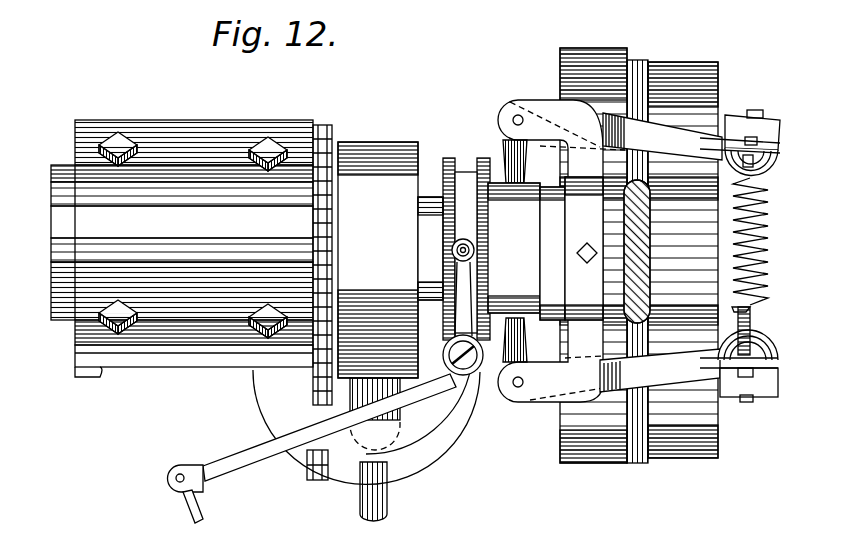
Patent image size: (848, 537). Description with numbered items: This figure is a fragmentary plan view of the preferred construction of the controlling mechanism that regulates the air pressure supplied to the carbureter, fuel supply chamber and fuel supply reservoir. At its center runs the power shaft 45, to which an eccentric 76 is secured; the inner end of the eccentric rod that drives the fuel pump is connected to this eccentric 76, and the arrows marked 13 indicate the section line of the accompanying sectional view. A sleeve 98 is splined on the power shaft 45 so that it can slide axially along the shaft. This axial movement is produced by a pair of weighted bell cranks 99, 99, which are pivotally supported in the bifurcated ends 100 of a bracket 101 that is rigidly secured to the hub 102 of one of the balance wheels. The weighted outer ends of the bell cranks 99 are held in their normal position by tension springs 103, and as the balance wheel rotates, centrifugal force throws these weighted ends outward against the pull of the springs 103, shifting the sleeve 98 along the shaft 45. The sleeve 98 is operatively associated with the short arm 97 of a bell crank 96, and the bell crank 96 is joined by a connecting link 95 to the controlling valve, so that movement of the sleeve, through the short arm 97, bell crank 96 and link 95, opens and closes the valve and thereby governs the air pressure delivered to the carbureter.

The section line 13 is at (547, 60).
The power shaft 45 is at (553, 210).
The eccentric 76 is at (377, 142).
The connecting link 95 is at (206, 511).
The bell crank 96 is at (231, 462).
The short arm 97 is at (460, 283).
The sleeve 98 is at (497, 182).
The weighted bell cranks 99 is at (693, 137).
The bifurcated ends 100 is at (520, 100).
The bracket 101 is at (580, 223).
The hub 102 is at (736, 217).
The tension springs 103 is at (757, 268).